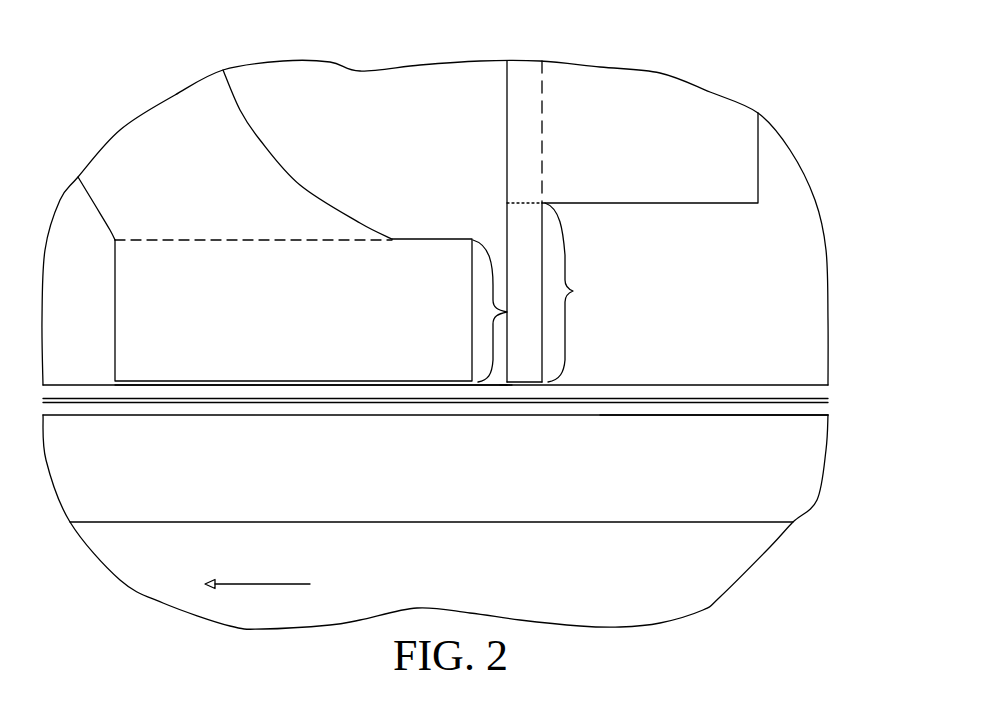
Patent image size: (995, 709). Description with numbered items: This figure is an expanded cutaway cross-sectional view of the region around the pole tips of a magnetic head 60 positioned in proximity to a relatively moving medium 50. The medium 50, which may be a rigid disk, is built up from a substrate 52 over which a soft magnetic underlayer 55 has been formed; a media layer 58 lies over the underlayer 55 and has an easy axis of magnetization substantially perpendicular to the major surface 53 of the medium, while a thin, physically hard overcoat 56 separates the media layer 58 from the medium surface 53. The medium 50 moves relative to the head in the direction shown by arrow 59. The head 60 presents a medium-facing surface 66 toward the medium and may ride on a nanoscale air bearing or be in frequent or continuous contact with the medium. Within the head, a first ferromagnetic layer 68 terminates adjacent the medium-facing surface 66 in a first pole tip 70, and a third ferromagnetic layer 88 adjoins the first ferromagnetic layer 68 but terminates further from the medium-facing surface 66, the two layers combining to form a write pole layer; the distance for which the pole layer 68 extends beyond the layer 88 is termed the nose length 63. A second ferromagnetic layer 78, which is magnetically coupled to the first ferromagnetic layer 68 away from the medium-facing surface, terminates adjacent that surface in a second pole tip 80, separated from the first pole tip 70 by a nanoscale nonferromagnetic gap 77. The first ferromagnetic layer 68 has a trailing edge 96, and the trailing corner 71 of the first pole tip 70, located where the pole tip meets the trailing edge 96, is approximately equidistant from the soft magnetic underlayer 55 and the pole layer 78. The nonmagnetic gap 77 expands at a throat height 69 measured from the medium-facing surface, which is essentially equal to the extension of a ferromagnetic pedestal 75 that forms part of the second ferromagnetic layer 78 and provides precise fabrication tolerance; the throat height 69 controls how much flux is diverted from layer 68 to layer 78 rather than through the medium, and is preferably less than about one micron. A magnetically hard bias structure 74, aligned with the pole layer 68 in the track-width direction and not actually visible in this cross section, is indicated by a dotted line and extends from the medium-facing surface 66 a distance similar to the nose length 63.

The medium 50 is at (820, 599).
The substrate 52 is at (431, 563).
The major surface 53 is at (758, 387).
The soft magnetic underlayer 55 is at (435, 448).
The overcoat 56 is at (668, 402).
The media layer 58 is at (740, 415).
The arrow 59 is at (255, 584).
The magnetic head 60 is at (799, 96).
The nose length 63 is at (576, 292).
The medium-facing surface 66 is at (793, 396).
The first ferromagnetic layer 68 is at (507, 150).
The throat height 69 is at (505, 311).
The first pole tip 70 is at (524, 395).
The trailing corner 71 is at (499, 394).
The magnetically hard bias structure 74 is at (527, 203).
The ferromagnetic pedestal 75 is at (220, 235).
The nonferromagnetic gap 77 is at (472, 312).
The second ferromagnetic layer 78 is at (262, 141).
The second pole tip 80 is at (293, 395).
The third ferromagnetic layer 88 is at (758, 167).
The trailing edge 96 is at (497, 113).